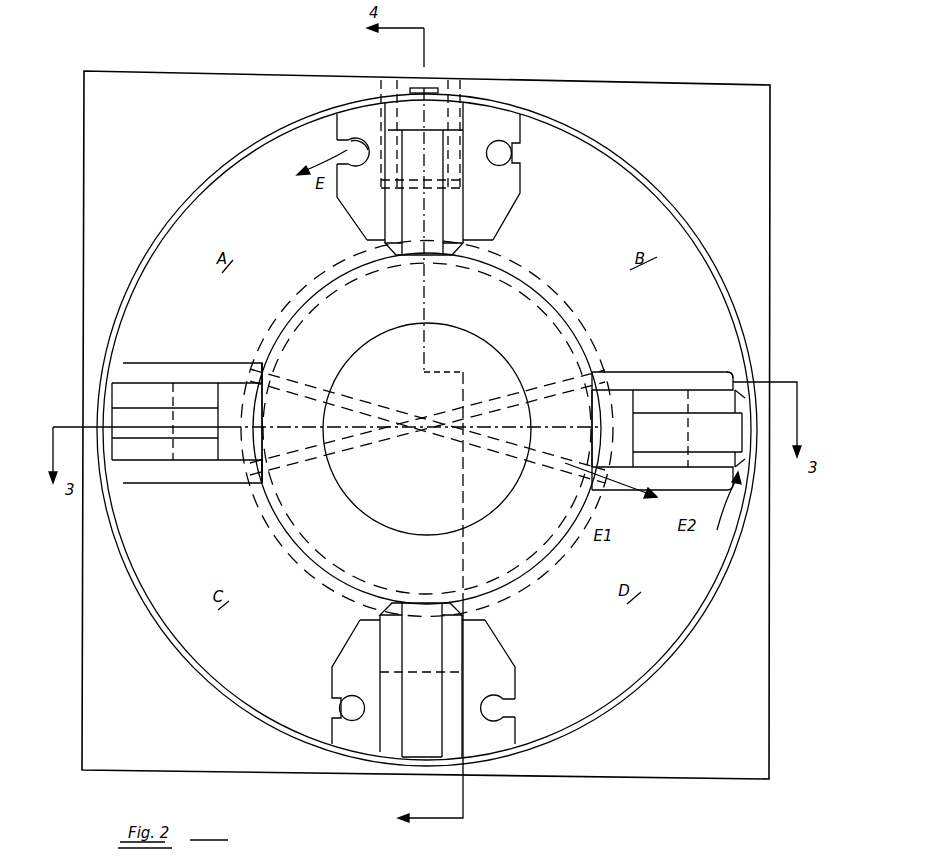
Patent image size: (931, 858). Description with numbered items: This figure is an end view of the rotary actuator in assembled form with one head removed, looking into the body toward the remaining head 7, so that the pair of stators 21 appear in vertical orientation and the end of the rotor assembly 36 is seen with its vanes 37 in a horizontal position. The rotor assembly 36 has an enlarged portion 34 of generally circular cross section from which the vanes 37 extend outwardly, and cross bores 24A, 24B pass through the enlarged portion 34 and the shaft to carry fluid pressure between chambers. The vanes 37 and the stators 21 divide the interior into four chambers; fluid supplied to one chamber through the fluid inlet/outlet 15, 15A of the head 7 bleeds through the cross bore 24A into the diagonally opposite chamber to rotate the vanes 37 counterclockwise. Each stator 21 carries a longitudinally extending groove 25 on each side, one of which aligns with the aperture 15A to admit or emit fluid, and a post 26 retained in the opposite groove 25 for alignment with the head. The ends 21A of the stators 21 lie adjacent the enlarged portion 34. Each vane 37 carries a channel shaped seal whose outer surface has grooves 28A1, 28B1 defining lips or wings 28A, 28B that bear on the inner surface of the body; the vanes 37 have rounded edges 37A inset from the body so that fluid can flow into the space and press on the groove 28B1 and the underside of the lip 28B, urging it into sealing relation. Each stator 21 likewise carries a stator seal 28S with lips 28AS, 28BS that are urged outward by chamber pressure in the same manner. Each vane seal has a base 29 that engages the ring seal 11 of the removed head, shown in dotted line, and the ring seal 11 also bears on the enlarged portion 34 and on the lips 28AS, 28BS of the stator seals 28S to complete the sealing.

The head 7 is at (210, 93).
The sealing ring 11 is at (280, 542).
The fluid inlet/outlet aperture 15 is at (430, 88).
The fluid inlet/outlet aperture 15A is at (368, 143).
The stator 21 is at (505, 185).
The stator end 21A is at (493, 238).
The cross bore 24A is at (262, 372).
The cross bore 24B is at (593, 372).
The longitudinally extending groove 25 is at (345, 148).
The post 26 is at (500, 157).
The lip 28A is at (115, 387).
The groove 28A1 is at (737, 400).
The lip 28B is at (118, 455).
The groove 28B1 is at (742, 460).
The stator seal 28S is at (432, 168).
The stator seal lip 28AS is at (470, 249).
The stator seal lip 28BS is at (385, 248).
The seal base 29 is at (453, 110).
The enlarged portion 34 is at (552, 303).
The rotor assembly 36 is at (317, 493).
The vane 37 is at (163, 375).
The rounded edge 37A is at (742, 378).